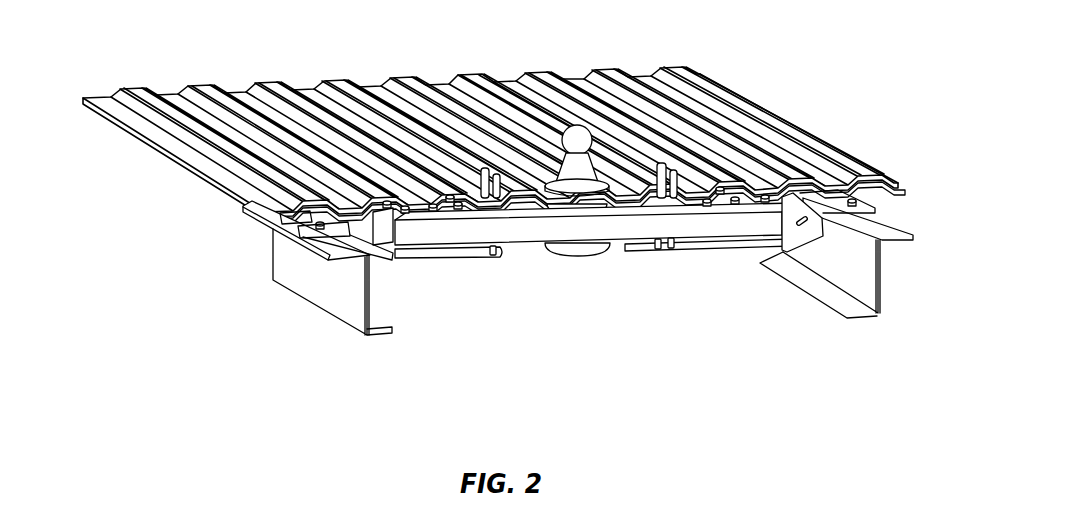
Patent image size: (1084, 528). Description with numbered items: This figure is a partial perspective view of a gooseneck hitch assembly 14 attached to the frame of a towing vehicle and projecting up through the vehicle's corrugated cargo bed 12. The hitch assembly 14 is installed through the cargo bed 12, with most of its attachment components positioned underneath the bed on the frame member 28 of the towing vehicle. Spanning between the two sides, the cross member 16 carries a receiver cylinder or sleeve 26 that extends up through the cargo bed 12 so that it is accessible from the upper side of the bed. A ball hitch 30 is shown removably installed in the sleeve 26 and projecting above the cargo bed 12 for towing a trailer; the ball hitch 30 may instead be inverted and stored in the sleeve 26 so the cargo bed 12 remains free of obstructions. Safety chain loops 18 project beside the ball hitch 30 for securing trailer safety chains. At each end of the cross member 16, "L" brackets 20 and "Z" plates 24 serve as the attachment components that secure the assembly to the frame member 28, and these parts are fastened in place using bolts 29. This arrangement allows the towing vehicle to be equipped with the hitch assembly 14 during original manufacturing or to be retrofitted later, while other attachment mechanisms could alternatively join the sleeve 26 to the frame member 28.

The cargo bed 12 is at (705, 88).
The hitch assembly 14 is at (624, 259).
The cross member 16 is at (523, 240).
The safety chain loops 18 is at (683, 168).
The "L" brackets 20 is at (318, 275).
The "Z" plates 24 is at (452, 258).
The receiver cylinder or sleeve 26 is at (582, 252).
The frame member 28 is at (378, 340).
The bolts 29 is at (722, 213).
The ball hitch 30 is at (573, 140).